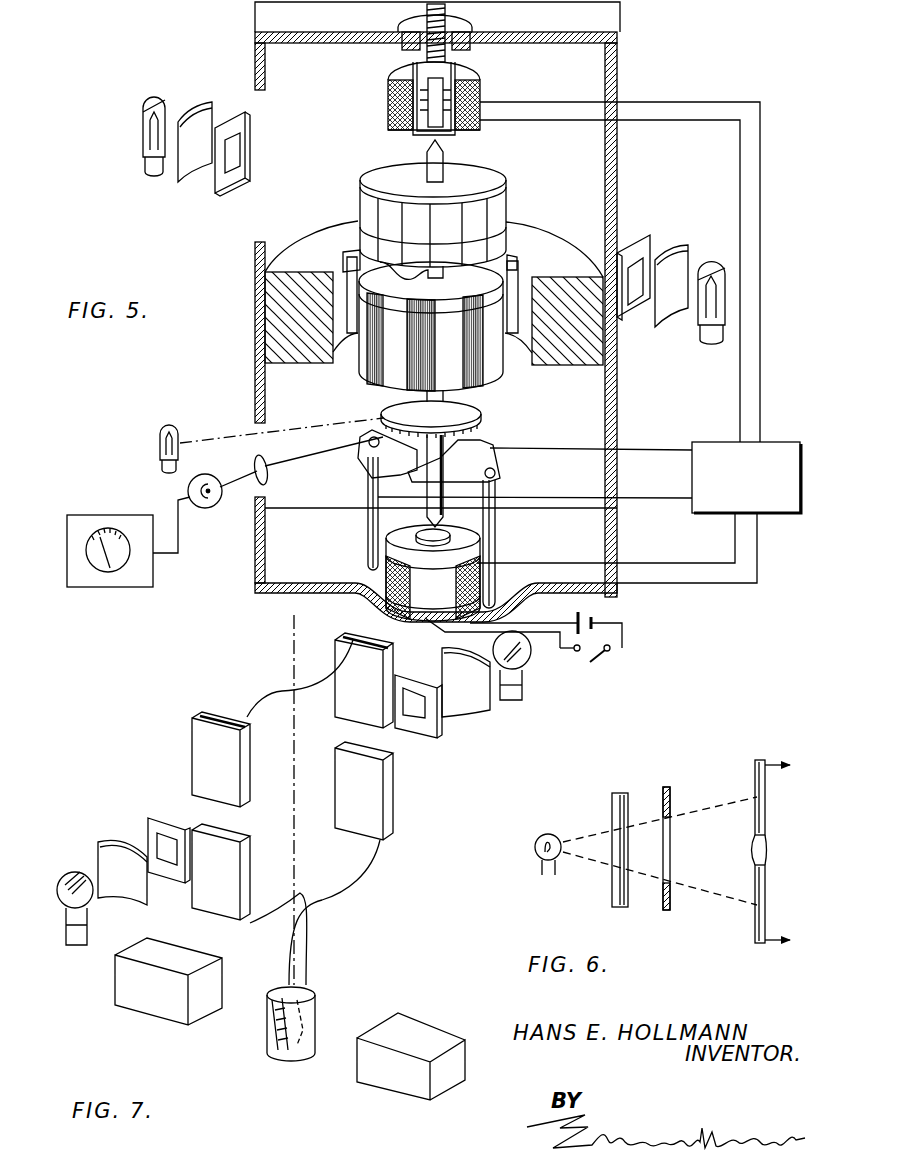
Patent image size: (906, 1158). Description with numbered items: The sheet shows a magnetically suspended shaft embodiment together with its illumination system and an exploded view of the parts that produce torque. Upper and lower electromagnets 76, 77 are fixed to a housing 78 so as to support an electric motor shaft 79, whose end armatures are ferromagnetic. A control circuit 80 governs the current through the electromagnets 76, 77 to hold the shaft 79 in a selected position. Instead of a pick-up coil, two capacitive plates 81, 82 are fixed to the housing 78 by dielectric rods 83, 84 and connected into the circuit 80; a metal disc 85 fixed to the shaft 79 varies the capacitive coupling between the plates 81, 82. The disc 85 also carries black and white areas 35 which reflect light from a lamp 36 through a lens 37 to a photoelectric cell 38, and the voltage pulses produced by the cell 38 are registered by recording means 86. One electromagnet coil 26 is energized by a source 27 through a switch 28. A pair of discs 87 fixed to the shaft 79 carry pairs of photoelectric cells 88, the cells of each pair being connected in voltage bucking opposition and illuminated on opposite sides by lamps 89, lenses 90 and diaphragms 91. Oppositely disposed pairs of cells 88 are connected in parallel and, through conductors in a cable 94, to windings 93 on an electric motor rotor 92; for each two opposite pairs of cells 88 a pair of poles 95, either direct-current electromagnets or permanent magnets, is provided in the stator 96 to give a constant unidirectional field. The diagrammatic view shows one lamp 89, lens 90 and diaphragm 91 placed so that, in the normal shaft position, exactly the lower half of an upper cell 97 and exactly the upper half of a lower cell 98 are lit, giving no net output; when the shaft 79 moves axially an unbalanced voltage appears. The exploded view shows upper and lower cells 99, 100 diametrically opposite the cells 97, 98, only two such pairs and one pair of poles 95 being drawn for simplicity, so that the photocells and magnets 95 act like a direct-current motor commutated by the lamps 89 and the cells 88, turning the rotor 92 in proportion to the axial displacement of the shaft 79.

In FIG. 5, the coil 26 is at (428, 606).
In FIG. 5, the source 27 is at (597, 617).
In FIG. 5, the switch 28 is at (596, 663).
In FIG. 5, the black and white areas 35 is at (484, 425).
In FIG. 5, the lamp 36 is at (160, 443).
In FIG. 5, the lens 37 is at (255, 461).
In FIG. 5, the photoelectric cell 38 is at (219, 505).
In FIG. 5, the upper electromagnet 76 is at (386, 112).
In FIG. 5, the lower electromagnet 77 is at (384, 578).
In FIG. 5, the housing 78 is at (617, 70).
In FIG. 5, the electric motor shaft 79 is at (447, 166).
In FIG. 5, the control circuit 80 is at (533, 342).
In FIG. 5, the capacitive plate 81 is at (372, 460).
In FIG. 5, the capacitive plate 82 is at (478, 460).
In FIG. 5, the dielectric rod 83 is at (368, 497).
In FIG. 5, the dielectric rod 84 is at (497, 487).
In FIG. 5, the metal disc 85 is at (470, 412).
In FIG. 5, the recording means 86 is at (143, 133).
In FIG. 5, the discs 87 is at (433, 215).
In FIG. 5, the pairs of photoelectric cells 88 is at (512, 203).
In FIG. 7, the pairs of photoelectric cells 88 is at (220, 712).
In FIG. 6, the pairs of photoelectric cells 88 is at (753, 763).
In FIG. 5, the lamp 89 is at (700, 325).
In FIG. 7, the lamp 89 is at (78, 875).
In FIG. 5, the lens 90 is at (190, 172).
In FIG. 7, the lens 90 is at (114, 845).
In FIG. 6, the lens 90 is at (627, 778).
In FIG. 5, the diaphragm 91 is at (245, 151).
In FIG. 7, the diaphragm 91 is at (165, 800).
In FIG. 6, the diaphragm 91 is at (667, 787).
In FIG. 5, the electric motor rotor 92 is at (388, 390).
In FIG. 7, the electric motor rotor 92 is at (300, 1055).
In FIG. 5, the windings 93 is at (372, 372).
In FIG. 7, the windings 93 is at (267, 1018).
In FIG. 5, the cable 94 is at (360, 262).
In FIG. 5, the poles 95 is at (343, 265).
In FIG. 7, the poles 95 is at (153, 1008).
In FIG. 5, the electric motor stator 96 is at (590, 364).
In FIG. 7, the upper cell 97 is at (192, 735).
In FIG. 6, the upper cell 97 is at (766, 760).
In FIG. 7, the lower cell 98 is at (228, 918).
In FIG. 6, the lower cell 98 is at (793, 918).
In FIG. 7, the upper cell 99 is at (347, 650).
In FIG. 7, the lower cell 100 is at (352, 820).